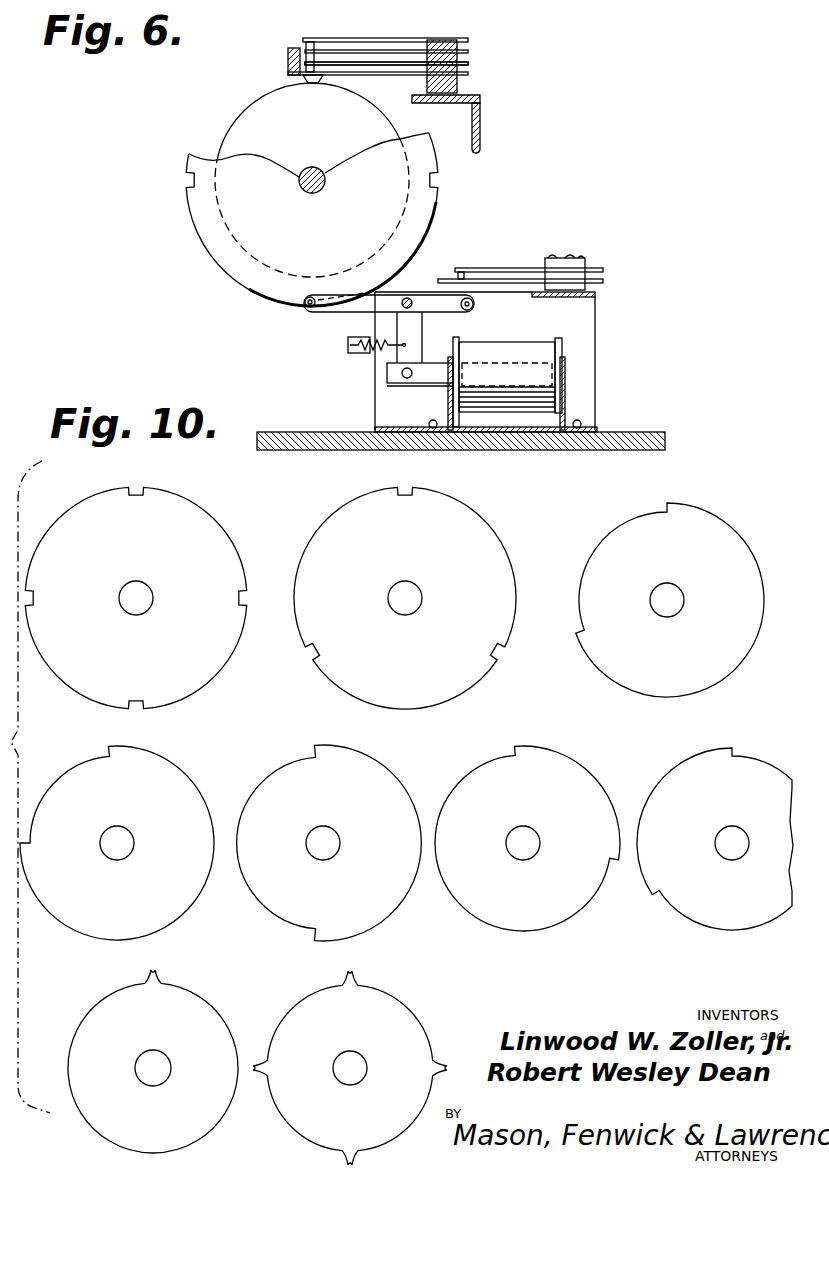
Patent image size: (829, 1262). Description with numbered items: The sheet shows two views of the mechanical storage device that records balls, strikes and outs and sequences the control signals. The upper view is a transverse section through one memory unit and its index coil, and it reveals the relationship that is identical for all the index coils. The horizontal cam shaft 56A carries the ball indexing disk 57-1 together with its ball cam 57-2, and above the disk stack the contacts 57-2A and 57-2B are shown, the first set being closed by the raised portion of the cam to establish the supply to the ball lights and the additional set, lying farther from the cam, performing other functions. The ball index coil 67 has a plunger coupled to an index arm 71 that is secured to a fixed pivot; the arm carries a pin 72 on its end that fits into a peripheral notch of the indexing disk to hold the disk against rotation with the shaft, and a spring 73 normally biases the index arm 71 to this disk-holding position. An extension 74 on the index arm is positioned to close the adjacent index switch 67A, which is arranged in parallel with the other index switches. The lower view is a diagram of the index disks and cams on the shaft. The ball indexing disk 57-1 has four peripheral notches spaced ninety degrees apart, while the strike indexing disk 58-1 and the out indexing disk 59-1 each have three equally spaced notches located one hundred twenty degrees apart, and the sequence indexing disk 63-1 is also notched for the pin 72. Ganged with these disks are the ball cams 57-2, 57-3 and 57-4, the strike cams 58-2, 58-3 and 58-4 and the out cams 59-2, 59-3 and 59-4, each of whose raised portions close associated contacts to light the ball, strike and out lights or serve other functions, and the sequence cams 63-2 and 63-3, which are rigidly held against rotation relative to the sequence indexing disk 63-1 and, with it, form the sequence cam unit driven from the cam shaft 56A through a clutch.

In FIG. 6, the cam shaft 56A is at (326, 192).
In FIG. 6, the ball indexing disk 57-1 is at (420, 221).
In FIG. 10, the ball indexing disk 57-1 is at (144, 604).
In FIG. 6, the ball cam 57-2 is at (258, 117).
In FIG. 10, the ball cam 57-2 is at (183, 912).
In FIG. 6, the ball cam contacts 57-2A is at (481, 56).
In FIG. 6, the additional ball cam contacts 57-2B is at (386, 63).
In FIG. 10, the ball cam 57-3 is at (370, 925).
In FIG. 10, the ball cam 57-4 is at (583, 903).
In FIG. 10, the strike indexing disk 58-1 is at (415, 604).
In FIG. 10, the strike cam 58-2 is at (675, 608).
In FIG. 10, the strike cam 58-3 is at (715, 864).
In FIG. 10, the strike cam 58-4 is at (151, 1056).
In FIG. 10, the out indexing disk 59-1 is at (477, 690).
In FIG. 10, the out cam 59-2 is at (725, 680).
In FIG. 10, the out cam 59-3 is at (720, 930).
In FIG. 10, the out cam 59-4 is at (110, 1007).
In FIG. 10, the sequence indexing disk 63-1 is at (203, 690).
In FIG. 10, the sequence cam 63-2 is at (350, 1062).
In FIG. 10, the sequence cam 63-3 is at (405, 1015).
In FIG. 6, the ball index coil 67 is at (520, 351).
In FIG. 6, the index switch 67A is at (493, 268).
In FIG. 6, the index arm 71 is at (342, 312).
In FIG. 6, the pin 72 is at (313, 308).
In FIG. 6, the spring 73 is at (360, 353).
In FIG. 6, the extension 74 is at (470, 310).